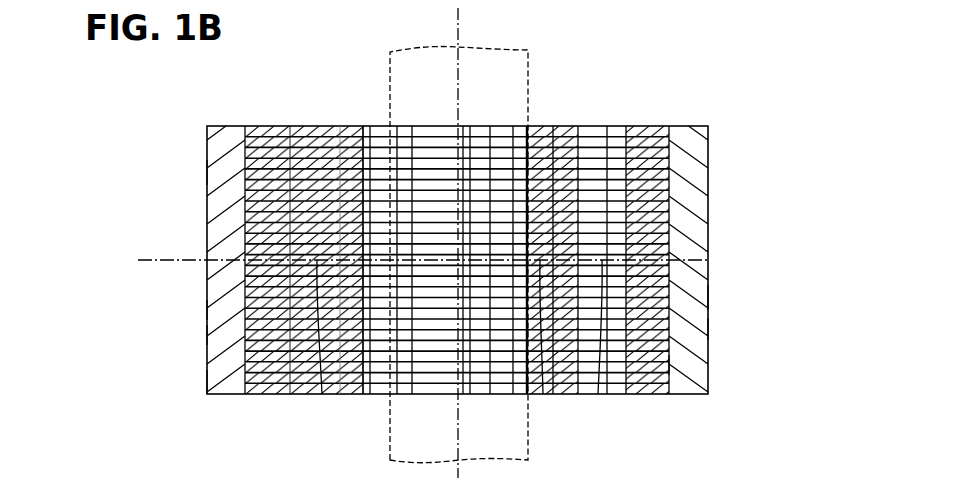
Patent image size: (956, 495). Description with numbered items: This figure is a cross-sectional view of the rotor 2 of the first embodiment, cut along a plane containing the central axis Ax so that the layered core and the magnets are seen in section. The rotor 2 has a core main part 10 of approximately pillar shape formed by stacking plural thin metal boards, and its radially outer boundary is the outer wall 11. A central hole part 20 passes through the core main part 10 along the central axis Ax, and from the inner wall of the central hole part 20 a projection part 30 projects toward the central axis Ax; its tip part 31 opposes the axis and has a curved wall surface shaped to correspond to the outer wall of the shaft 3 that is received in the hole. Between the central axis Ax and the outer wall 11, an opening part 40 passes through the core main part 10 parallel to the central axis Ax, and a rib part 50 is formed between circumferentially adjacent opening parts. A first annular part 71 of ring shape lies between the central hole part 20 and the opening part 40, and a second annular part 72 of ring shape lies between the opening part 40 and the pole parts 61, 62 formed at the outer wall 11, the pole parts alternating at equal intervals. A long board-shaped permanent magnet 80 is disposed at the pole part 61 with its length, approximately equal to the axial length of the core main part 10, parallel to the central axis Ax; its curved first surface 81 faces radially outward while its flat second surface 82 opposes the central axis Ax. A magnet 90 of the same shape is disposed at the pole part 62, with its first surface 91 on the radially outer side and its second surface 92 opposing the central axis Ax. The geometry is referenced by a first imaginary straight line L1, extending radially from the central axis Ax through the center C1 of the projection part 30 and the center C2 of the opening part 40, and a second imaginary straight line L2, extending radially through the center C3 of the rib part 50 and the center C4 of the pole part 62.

The rotor 2 is at (608, 48).
The shaft 3 is at (528, 60).
The core main part 10 is at (253, 126).
The outer wall 11 is at (208, 147).
The central hole part 20 is at (364, 374).
The projection part 30 is at (380, 126).
The tip part 31 is at (407, 126).
The opening part 40 is at (617, 126).
The rib part 50 is at (316, 126).
The pole part 61 is at (708, 188).
The pole part 62 is at (208, 172).
The first annular part 71 is at (353, 126).
The second annular part 72 is at (281, 126).
The magnet 80 is at (703, 298).
The first surface 81 is at (708, 330).
The second surface 82 is at (670, 363).
The magnet 90 is at (230, 311).
The first surface 91 is at (212, 334).
The second surface 92 is at (245, 378).
The central axis Ax is at (460, 24).
The first imaginary straight line L1 is at (672, 259).
The second imaginary straight line L2 is at (152, 258).
The center of the projection part C1 is at (543, 394).
The center of the opening part C2 is at (598, 394).
The center of the rib part C3 is at (322, 394).
The center of the pole part C4 is at (208, 262).